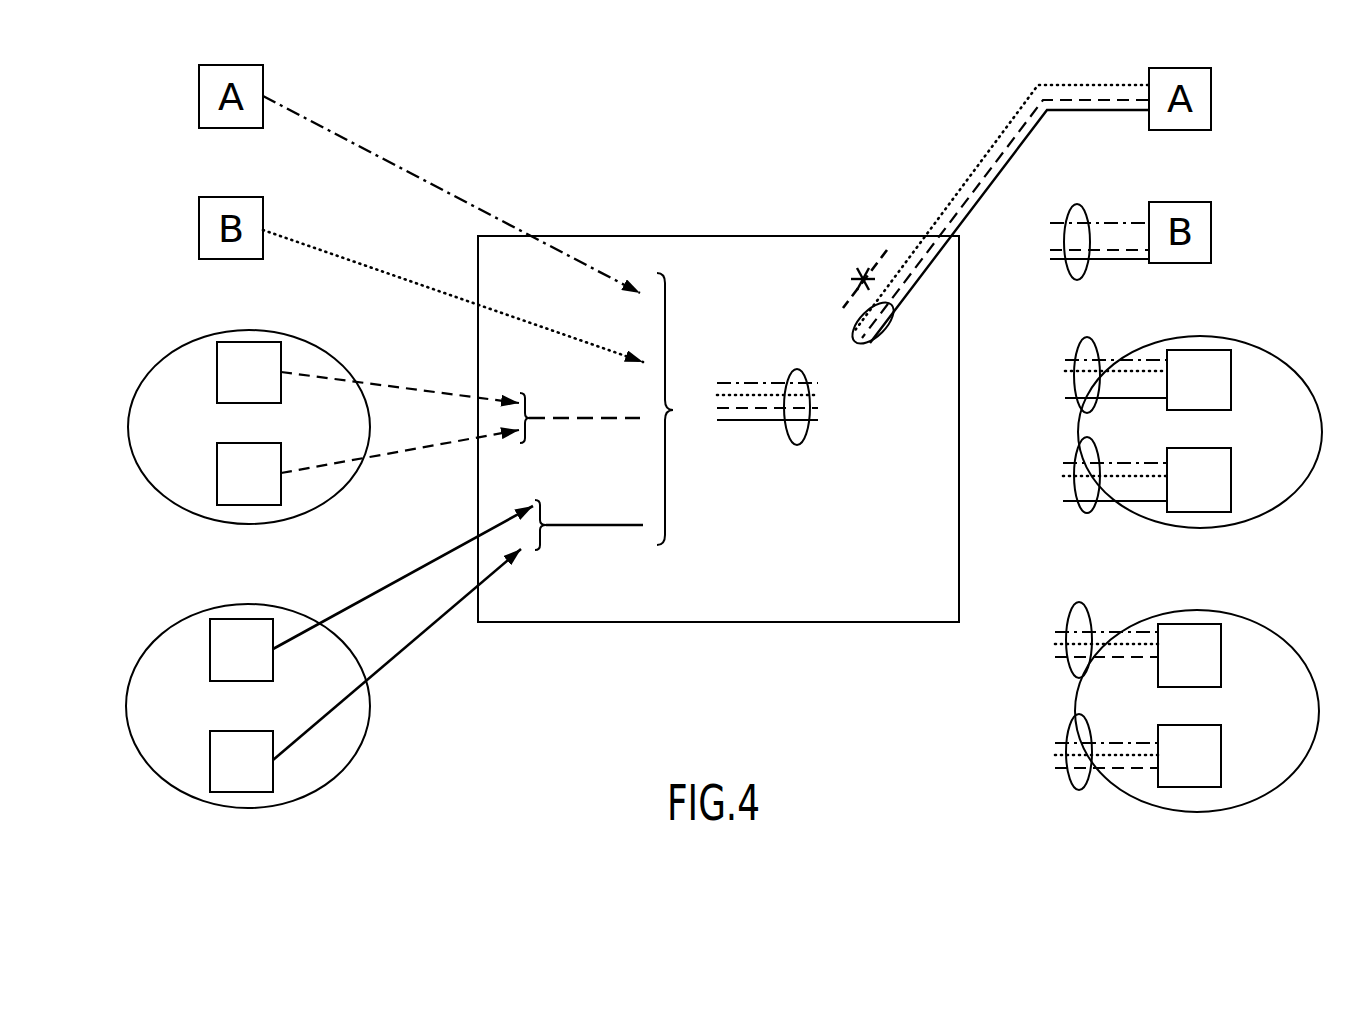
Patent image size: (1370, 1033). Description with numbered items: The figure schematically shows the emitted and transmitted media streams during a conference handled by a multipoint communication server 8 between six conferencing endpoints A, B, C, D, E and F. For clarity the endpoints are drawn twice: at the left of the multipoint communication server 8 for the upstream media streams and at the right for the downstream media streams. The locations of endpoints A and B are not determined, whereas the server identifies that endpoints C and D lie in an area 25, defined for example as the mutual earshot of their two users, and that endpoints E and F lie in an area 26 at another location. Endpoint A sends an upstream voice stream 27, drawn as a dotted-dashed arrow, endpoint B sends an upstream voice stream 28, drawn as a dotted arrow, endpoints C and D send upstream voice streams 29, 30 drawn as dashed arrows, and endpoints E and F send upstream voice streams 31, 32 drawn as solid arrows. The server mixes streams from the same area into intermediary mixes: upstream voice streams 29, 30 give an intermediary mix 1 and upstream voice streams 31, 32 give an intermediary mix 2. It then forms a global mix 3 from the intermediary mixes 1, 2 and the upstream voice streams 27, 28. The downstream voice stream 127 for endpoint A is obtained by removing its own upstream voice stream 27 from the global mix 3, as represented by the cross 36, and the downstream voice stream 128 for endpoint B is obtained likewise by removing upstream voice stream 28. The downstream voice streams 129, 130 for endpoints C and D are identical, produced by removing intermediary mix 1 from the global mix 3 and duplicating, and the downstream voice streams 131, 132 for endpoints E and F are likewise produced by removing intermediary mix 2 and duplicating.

The intermediary mix 1 is at (583, 414).
The intermediary mix 2 is at (595, 524).
The global mix 3 is at (796, 370).
The multipoint communication server 8 is at (718, 235).
The area 25 is at (175, 350).
The area 26 is at (170, 630).
The upstream voice stream 27 is at (363, 148).
The upstream voice stream 28 is at (363, 262).
The upstream voice stream 29 is at (370, 387).
The upstream voice stream 30 is at (373, 452).
The upstream voice stream 31 is at (395, 582).
The upstream voice stream 32 is at (400, 652).
The cross 36 is at (862, 270).
The downstream voice stream 127 is at (893, 335).
The downstream voice stream 128 is at (1072, 280).
The downstream voice stream 129 is at (1093, 338).
The downstream voice stream 130 is at (1089, 514).
The downstream voice stream 131 is at (1077, 603).
The downstream voice stream 132 is at (1078, 790).